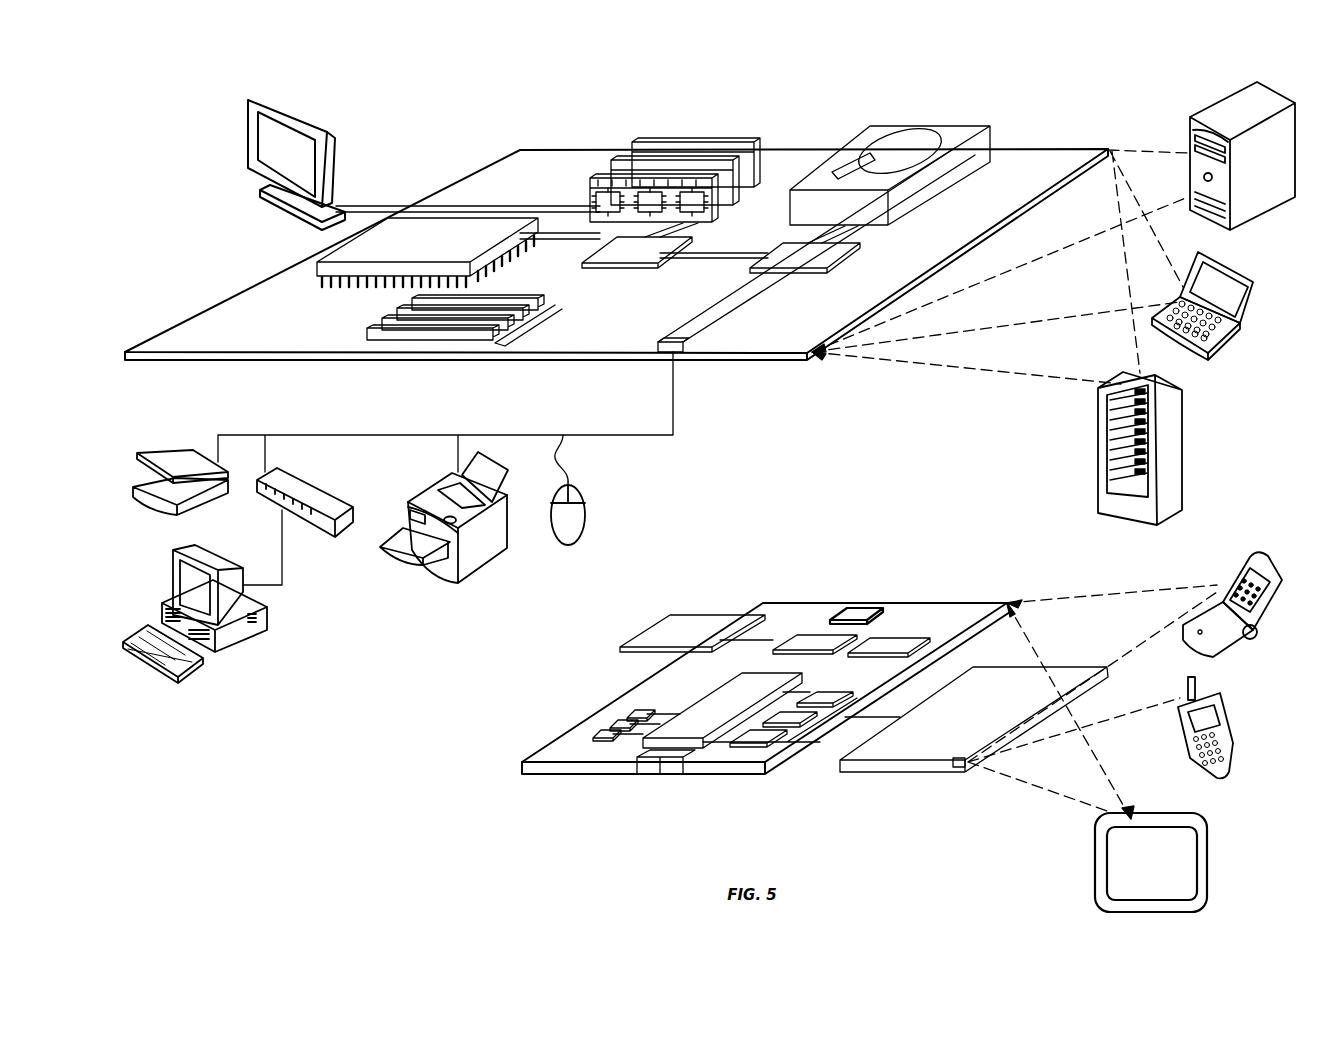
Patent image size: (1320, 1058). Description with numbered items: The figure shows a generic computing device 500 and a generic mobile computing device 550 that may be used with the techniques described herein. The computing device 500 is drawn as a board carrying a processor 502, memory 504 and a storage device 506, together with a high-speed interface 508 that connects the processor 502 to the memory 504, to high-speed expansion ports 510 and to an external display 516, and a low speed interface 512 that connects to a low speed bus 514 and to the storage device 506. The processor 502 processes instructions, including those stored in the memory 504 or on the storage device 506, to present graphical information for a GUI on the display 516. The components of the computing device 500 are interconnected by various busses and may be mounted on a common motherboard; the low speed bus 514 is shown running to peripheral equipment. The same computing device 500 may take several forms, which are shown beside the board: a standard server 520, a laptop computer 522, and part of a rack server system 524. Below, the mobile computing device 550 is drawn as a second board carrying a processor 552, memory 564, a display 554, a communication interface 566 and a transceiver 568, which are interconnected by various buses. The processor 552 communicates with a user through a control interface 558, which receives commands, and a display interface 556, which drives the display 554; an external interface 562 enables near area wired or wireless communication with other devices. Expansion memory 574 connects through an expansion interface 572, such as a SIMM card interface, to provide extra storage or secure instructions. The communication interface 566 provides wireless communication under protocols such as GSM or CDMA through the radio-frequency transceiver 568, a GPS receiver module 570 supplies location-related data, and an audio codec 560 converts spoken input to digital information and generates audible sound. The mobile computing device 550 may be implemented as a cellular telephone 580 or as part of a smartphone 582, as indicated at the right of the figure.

The computing device 500 is at (446, 126).
The processor 502 is at (317, 265).
The memory 504 is at (645, 144).
The storage device 506 is at (877, 132).
The high-speed interface 508 is at (611, 250).
The high-speed expansion ports 510 is at (380, 330).
The low speed interface 512 is at (788, 253).
The low speed bus 514 is at (678, 347).
The display 516 is at (248, 101).
The standard server 520 is at (1188, 133).
The laptop computer 522 is at (1253, 279).
The rack server system 524 is at (1097, 475).
The mobile computing device 550 is at (498, 769).
The processor 552 is at (698, 733).
The display 554 is at (931, 738).
The display interface 556 is at (765, 737).
The control interface 558 is at (826, 697).
The audio codec 560 is at (821, 695).
The external interface 562 is at (662, 765).
The memory 564 is at (613, 724).
The communication interface 566 is at (816, 638).
The transceiver 568 is at (898, 637).
The GPS receiver module 570 is at (865, 608).
The expansion interface 572 is at (747, 613).
The expansion memory 574 is at (670, 617).
The cellular telephone 580 is at (1245, 562).
The smartphone 582 is at (1176, 741).